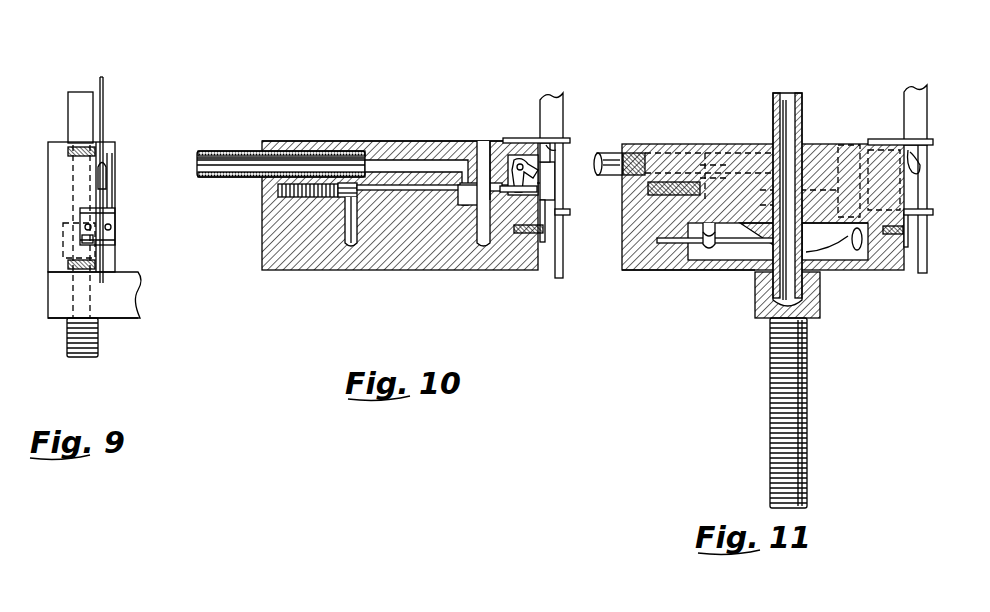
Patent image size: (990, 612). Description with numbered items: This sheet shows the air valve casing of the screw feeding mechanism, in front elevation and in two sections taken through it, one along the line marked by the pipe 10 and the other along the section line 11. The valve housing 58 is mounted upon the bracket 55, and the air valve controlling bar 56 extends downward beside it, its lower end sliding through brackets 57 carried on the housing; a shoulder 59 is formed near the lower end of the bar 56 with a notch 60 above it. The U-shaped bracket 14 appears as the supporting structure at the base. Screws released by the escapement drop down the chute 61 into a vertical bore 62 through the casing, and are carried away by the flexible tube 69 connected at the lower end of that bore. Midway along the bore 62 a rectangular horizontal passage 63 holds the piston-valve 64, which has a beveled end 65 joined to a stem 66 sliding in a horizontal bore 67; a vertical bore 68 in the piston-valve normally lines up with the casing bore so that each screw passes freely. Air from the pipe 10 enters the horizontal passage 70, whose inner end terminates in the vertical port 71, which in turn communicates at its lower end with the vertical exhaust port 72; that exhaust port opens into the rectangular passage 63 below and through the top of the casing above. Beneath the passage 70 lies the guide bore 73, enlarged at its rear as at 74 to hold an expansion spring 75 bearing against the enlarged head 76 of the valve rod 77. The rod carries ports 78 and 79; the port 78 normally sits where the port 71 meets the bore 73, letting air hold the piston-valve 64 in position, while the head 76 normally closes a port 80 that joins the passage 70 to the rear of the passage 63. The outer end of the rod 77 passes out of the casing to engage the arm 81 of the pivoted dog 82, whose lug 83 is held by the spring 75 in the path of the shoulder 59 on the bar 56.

In FIG. 9, the pipe 10 is at (103, 77).
In FIG. 10, the pipe 10 is at (238, 152).
In FIG. 11, the pipe 10 is at (600, 176).
In FIG. 9, the section line 11- 11 is at (82, 112).
In FIG. 9, the U-shaped bracket 14 is at (80, 291).
In FIG. 9, the bracket 55 is at (136, 282).
In FIG. 11, the bracket 55 is at (760, 300).
In FIG. 9, the air valve controlling bar 56 is at (104, 126).
In FIG. 10, the air valve controlling bar 56 is at (548, 118).
In FIG. 11, the air valve controlling bar 56 is at (916, 112).
In FIG. 10, the brackets 57 is at (572, 140).
In FIG. 11, the brackets 57 is at (934, 141).
In FIG. 9, the valve housing 58 is at (112, 196).
In FIG. 10, the valve housing 58 is at (536, 268).
In FIG. 11, the valve housing 58 is at (646, 272).
In FIG. 10, the shoulder 59 is at (562, 143).
In FIG. 11, the shoulder 59 is at (922, 172).
In FIG. 10, the notch 60 is at (558, 138).
In FIG. 11, the notch 60 is at (916, 139).
In FIG. 9, the chute 61 is at (86, 104).
In FIG. 11, the chute 61 is at (797, 112).
In FIG. 9, the vertical bore 62 is at (68, 190).
In FIG. 11, the vertical bore 62 is at (792, 182).
In FIG. 9, the horizontal passage 63 is at (64, 242).
In FIG. 11, the horizontal passage 63 is at (832, 262).
In FIG. 11, the piston-valve 64 is at (862, 250).
In FIG. 11, the beveled end 65 is at (746, 262).
In FIG. 11, the stem 66 is at (708, 262).
In FIG. 11, the horizontal bore 67 is at (662, 266).
In FIG. 11, the vertical bore 68 is at (835, 234).
In FIG. 9, the flexible tube 69 is at (98, 347).
In FIG. 11, the flexible tube 69 is at (808, 402).
In FIG. 10, the horizontal passage 70 is at (310, 141).
In FIG. 11, the horizontal passage 70 is at (690, 145).
In FIG. 10, the vertical port 71 is at (482, 145).
In FIG. 11, the vertical port 71 is at (843, 148).
In FIG. 10, the vertical exhaust port 72 is at (493, 152).
In FIG. 11, the vertical exhaust port 72 is at (864, 146).
In FIG. 10, the guide bore 73 is at (400, 160).
In FIG. 11, the guide bore 73 is at (768, 145).
In FIG. 10, the enlarged portion 74 is at (290, 215).
In FIG. 11, the enlarged portion 74 is at (642, 218).
In FIG. 10, the expansion spring 75 is at (278, 190).
In FIG. 10, the enlarged head 76 is at (349, 183).
In FIG. 10, the valve rod 77 is at (433, 192).
In FIG. 10, the port 78 is at (460, 262).
In FIG. 10, the port 79 is at (514, 182).
In FIG. 10, the port 80 is at (345, 248).
In FIG. 11, the port 80 is at (700, 262).
In FIG. 10, the arm 81 is at (537, 191).
In FIG. 10, the pivoted dog 82 is at (540, 184).
In FIG. 10, the lug 83 is at (548, 172).